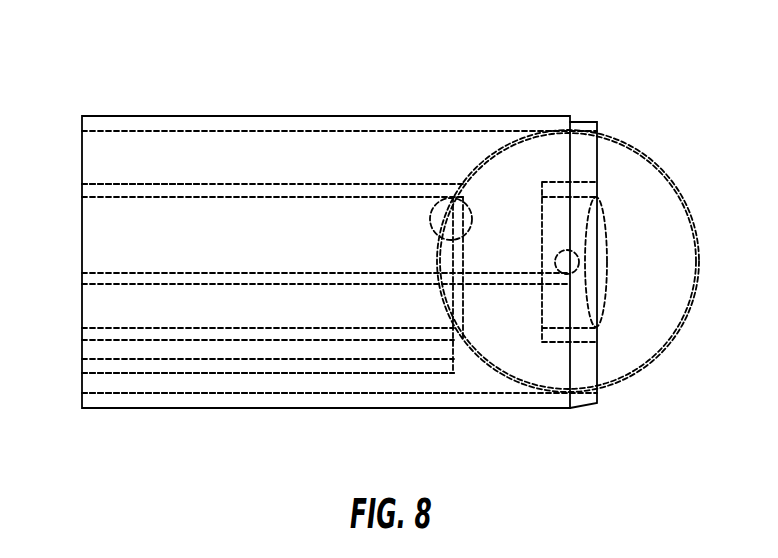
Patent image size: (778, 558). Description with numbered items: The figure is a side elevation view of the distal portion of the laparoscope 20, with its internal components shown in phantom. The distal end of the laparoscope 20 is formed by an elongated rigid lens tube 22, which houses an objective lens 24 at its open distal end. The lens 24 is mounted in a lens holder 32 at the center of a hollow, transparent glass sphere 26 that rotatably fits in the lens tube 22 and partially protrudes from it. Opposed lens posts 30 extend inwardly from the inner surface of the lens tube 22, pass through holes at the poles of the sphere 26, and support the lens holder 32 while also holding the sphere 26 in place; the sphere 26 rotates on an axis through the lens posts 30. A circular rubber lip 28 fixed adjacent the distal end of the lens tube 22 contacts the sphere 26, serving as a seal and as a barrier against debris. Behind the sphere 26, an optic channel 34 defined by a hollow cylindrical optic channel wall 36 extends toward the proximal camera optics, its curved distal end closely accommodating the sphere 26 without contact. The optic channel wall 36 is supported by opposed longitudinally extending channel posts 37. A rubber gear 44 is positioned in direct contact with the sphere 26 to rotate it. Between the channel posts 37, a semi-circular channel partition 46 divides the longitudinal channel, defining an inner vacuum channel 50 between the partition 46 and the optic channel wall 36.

The laparoscope 20 is at (425, 108).
The lens tube 22 is at (158, 122).
The objective lens 24 is at (607, 258).
The glass sphere 26 is at (695, 298).
The rubber lip 28 is at (583, 124).
The lens posts 30 is at (556, 257).
The lens holder 32 is at (584, 192).
The optic channel 34 is at (123, 197).
The optic channel wall 36 is at (202, 193).
The channel posts 37 is at (83, 282).
The rubber gear 44 is at (430, 220).
The channel partition 46 is at (82, 367).
The vacuum channel 50 is at (155, 390).